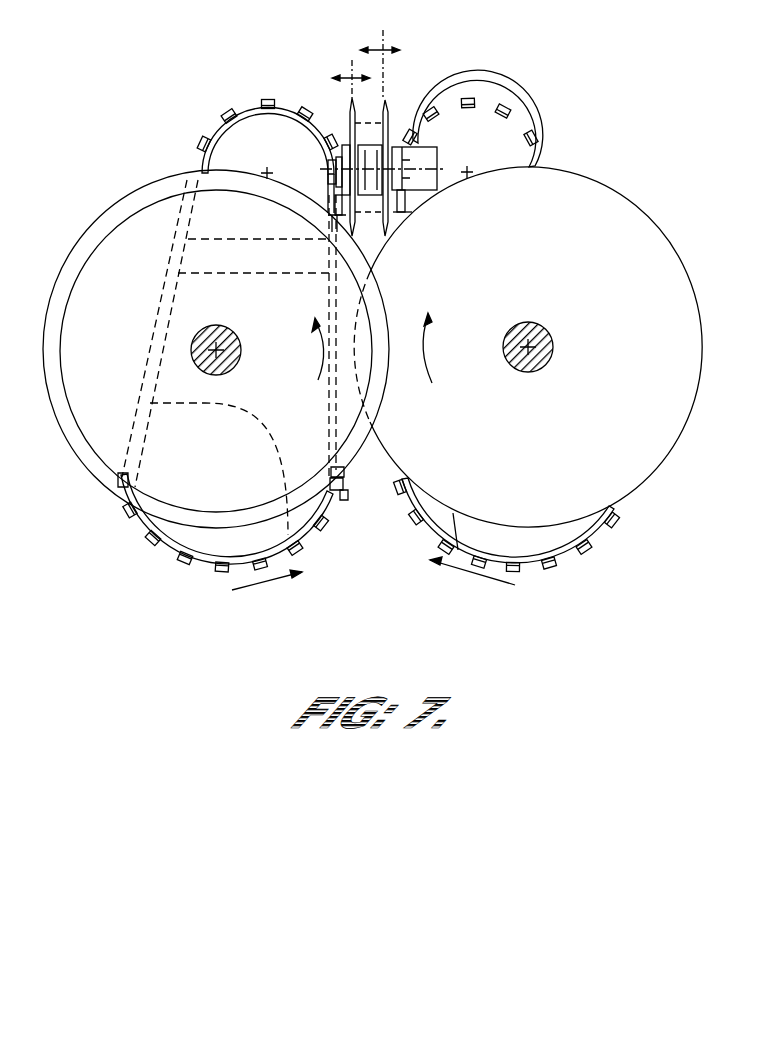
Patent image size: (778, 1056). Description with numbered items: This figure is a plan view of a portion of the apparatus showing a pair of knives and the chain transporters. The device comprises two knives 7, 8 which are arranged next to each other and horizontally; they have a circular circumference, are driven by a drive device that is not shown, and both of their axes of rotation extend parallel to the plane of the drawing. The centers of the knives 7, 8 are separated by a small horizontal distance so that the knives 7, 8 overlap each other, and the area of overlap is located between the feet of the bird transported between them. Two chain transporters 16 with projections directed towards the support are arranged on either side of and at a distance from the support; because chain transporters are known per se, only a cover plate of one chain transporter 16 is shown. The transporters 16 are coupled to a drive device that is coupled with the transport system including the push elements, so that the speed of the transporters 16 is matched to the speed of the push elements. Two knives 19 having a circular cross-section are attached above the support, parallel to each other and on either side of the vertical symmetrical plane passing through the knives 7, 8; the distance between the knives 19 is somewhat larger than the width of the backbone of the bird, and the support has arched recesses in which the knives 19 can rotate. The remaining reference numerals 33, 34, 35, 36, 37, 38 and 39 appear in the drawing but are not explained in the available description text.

The knife 7 is at (100, 257).
The knife 8 is at (623, 215).
The chain transporter 16 is at (245, 105).
The knife 19 is at (348, 113).
The pads 33 is at (203, 142).
The rotation direction of first drum 34 is at (310, 372).
The rotation direction of second drum 35 is at (430, 355).
The direction of movement 36 is at (253, 590).
The cutting disc 37 is at (350, 78).
The cutting disc 38 is at (380, 50).
The gap 39 is at (366, 515).